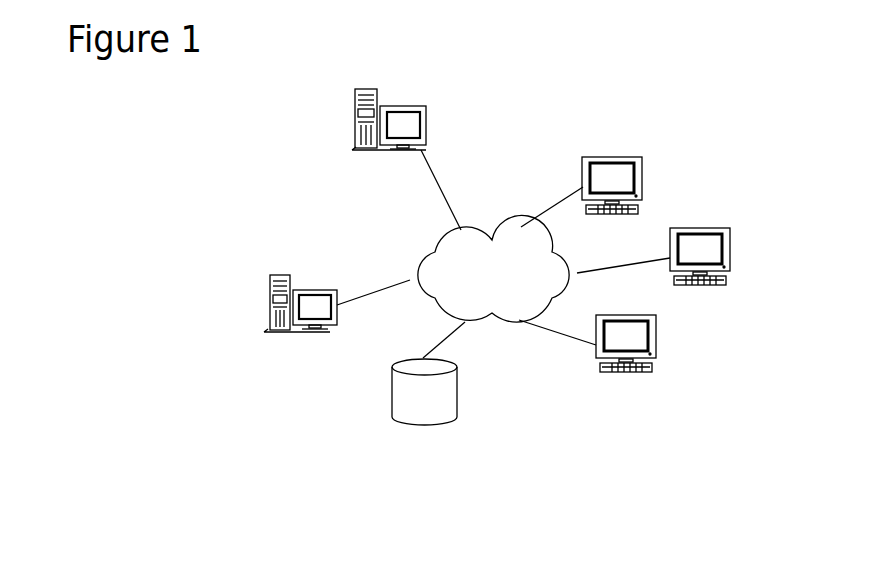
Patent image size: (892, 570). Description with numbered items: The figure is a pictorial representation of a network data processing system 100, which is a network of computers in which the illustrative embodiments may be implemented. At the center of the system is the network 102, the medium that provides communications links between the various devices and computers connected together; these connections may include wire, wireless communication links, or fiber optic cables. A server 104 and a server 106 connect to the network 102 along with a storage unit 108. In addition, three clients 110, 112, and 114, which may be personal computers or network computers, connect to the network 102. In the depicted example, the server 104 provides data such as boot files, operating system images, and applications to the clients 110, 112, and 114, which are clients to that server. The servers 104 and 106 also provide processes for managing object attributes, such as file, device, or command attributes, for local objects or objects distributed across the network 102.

The network data processing system 100 is at (570, 370).
The network 102 is at (481, 269).
The server 104 is at (313, 290).
The server 106 is at (401, 106).
The storage unit 108 is at (457, 390).
The client 110 is at (608, 157).
The client 112 is at (700, 228).
The client 114 is at (656, 345).